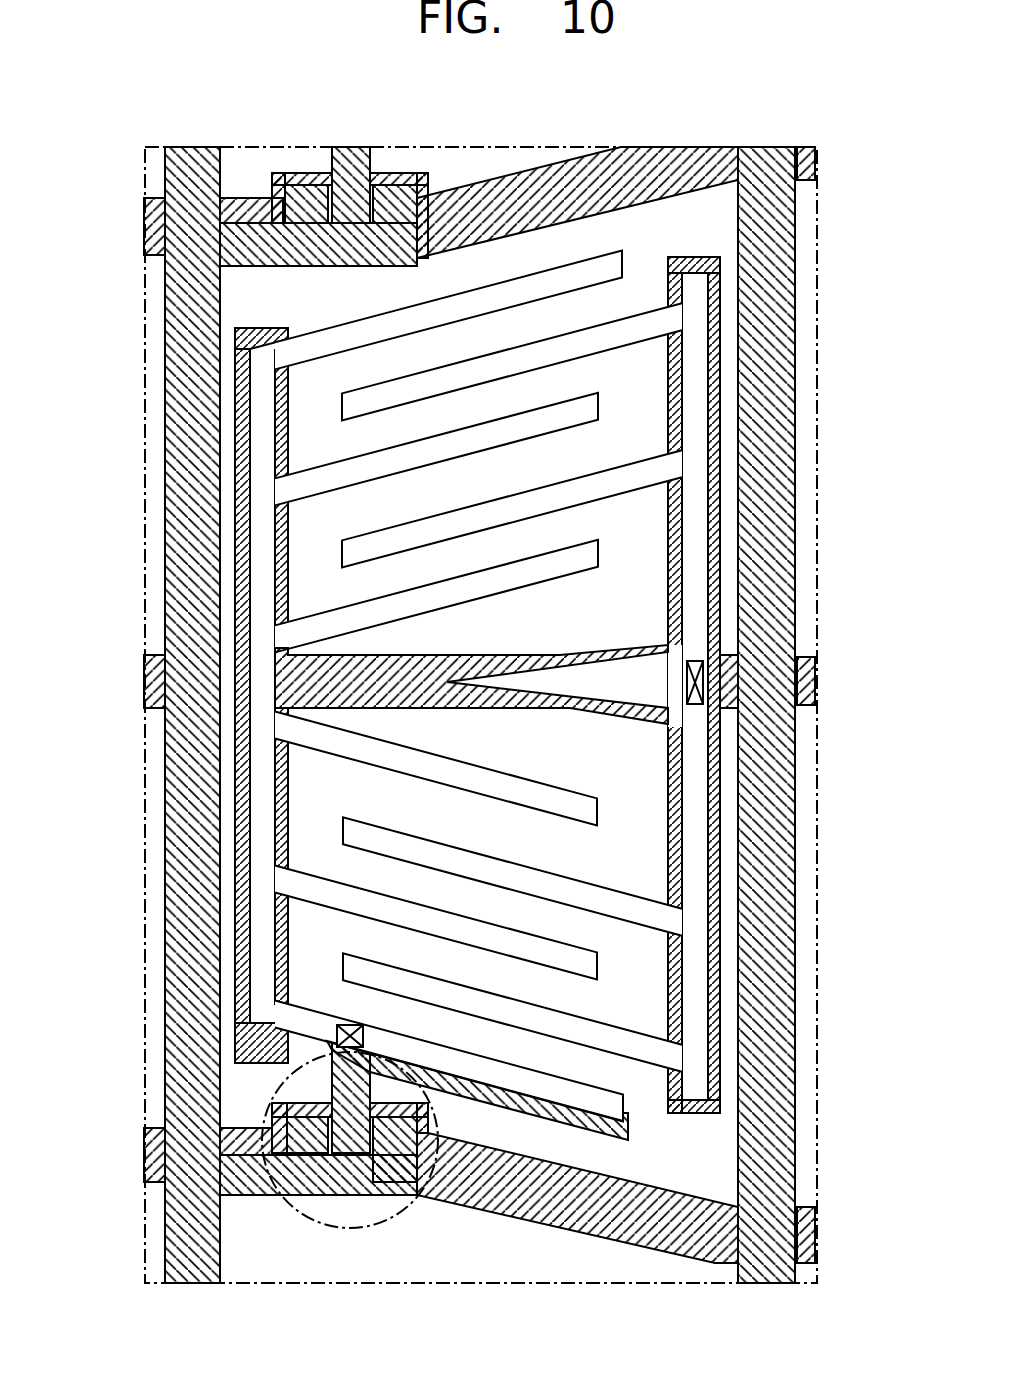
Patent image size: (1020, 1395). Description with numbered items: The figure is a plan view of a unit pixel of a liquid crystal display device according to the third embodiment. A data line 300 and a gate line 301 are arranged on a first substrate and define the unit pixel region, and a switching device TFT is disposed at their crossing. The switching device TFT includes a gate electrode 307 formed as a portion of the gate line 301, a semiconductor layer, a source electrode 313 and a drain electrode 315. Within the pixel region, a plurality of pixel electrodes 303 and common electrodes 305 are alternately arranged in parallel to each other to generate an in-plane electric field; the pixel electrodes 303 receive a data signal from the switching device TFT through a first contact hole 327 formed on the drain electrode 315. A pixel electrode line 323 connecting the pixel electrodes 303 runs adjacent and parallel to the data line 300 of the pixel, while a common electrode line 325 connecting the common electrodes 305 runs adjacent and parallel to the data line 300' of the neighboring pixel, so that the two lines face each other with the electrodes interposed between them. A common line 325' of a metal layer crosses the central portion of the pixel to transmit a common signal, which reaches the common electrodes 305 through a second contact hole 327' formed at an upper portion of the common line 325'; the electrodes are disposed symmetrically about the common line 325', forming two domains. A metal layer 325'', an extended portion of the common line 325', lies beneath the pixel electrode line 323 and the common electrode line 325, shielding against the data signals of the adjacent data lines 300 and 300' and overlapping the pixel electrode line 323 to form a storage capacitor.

The data line 300 is at (150, 715).
The data line of the neighboring pixel 300' is at (826, 715).
The gate line 301 is at (577, 1215).
The pixel electrode 303 is at (365, 467).
The common electrode 305 is at (585, 489).
The gate electrode 307 is at (287, 1187).
The source electrode 313 is at (400, 1182).
The drain electrode 315 is at (352, 1153).
The pixel electrode line 323 is at (258, 598).
The common electrode line 325 is at (795, 686).
The common line 325' is at (594, 686).
The metal layer 325'' is at (499, 685).
The first contact hole 327 is at (221, 1031).
The second contact hole 327' is at (800, 705).
The switching device TFT is at (264, 1092).